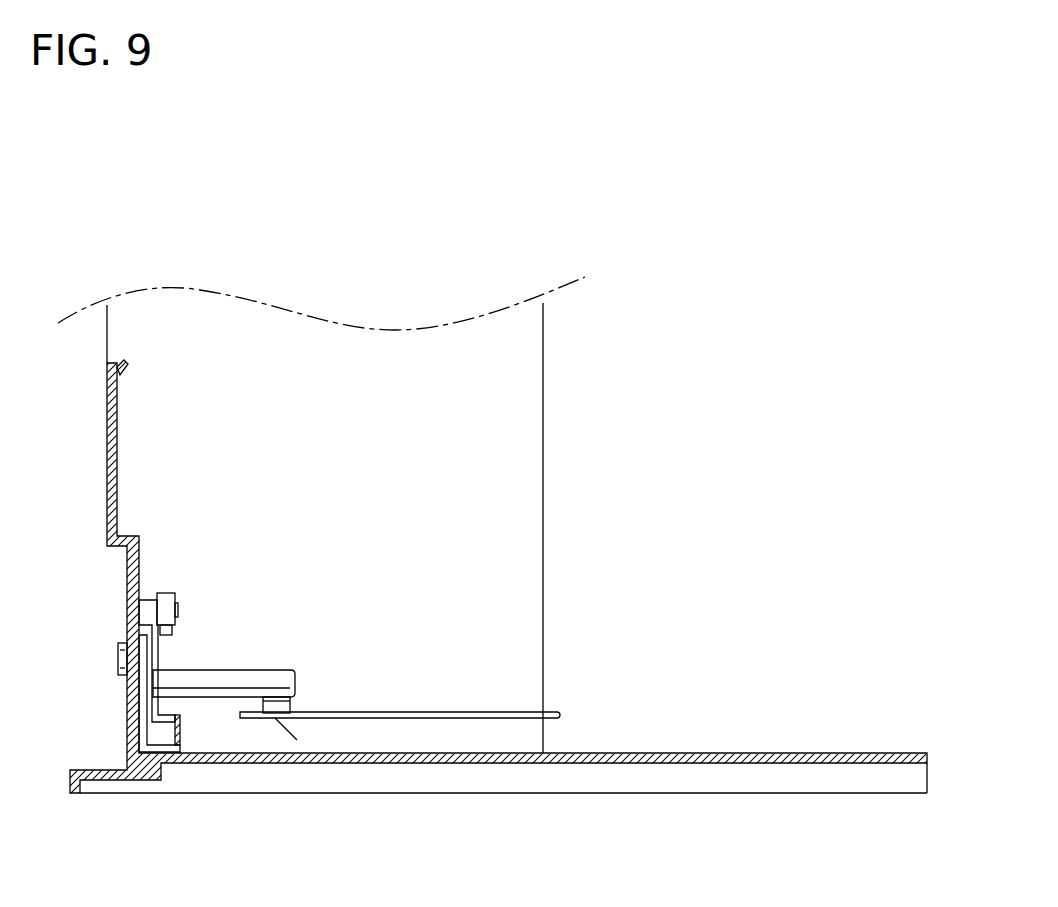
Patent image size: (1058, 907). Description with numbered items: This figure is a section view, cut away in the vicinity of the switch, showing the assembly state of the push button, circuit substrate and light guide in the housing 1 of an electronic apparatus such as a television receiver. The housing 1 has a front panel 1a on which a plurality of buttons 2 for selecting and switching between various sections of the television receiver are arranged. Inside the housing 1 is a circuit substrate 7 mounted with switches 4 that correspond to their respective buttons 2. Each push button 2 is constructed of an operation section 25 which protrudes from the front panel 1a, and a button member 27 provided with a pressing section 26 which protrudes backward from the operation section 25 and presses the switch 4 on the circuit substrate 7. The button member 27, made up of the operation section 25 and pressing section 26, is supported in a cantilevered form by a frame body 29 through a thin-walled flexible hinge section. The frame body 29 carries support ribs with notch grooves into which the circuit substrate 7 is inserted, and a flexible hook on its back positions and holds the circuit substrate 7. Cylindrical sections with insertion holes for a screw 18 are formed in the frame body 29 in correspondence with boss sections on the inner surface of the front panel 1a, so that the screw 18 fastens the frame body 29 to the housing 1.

The housing 1 is at (76, 378).
The front panel 1a is at (107, 452).
The button 2 is at (255, 707).
The switch 4 is at (279, 713).
The circuit substrate 7 is at (525, 717).
The screw 18 is at (178, 610).
The operation section 25 is at (117, 660).
The pressing section 26 is at (230, 682).
The button member 27 is at (172, 661).
The frame body 29 is at (143, 702).